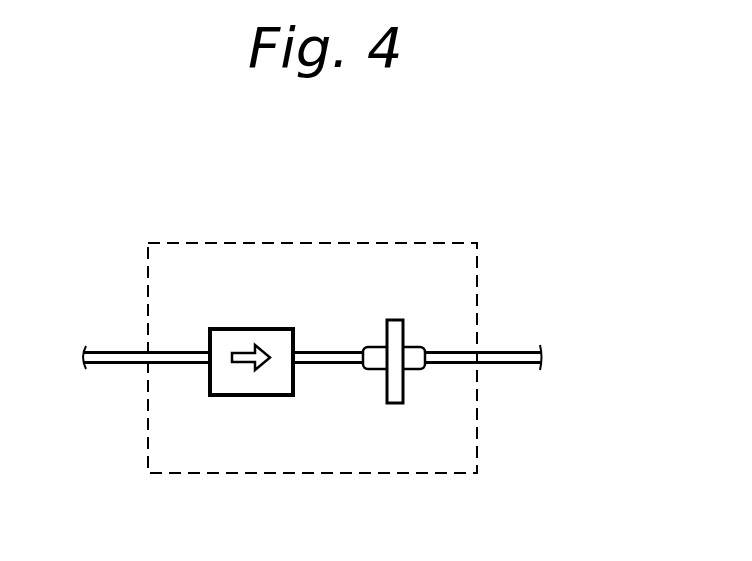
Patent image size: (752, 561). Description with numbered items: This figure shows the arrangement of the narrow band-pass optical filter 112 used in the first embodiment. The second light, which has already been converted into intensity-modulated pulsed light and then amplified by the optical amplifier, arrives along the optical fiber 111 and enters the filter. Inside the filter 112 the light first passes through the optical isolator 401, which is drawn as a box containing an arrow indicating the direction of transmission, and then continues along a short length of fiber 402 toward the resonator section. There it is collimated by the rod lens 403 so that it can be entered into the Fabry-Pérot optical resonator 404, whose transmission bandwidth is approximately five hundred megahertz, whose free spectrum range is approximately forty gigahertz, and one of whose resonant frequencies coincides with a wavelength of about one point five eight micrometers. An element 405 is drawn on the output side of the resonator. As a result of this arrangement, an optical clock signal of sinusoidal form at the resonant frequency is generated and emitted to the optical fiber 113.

The optical fiber 111 is at (173, 365).
The narrow band-pass optical filter 112 is at (348, 240).
The optical fiber 113 is at (460, 350).
The optical isolator 401 is at (250, 396).
The optical fiber 402 is at (307, 350).
The rod lens 403 is at (365, 370).
The Fabry-Pérot optical resonator 404 is at (401, 320).
The ferrule 405 is at (417, 370).